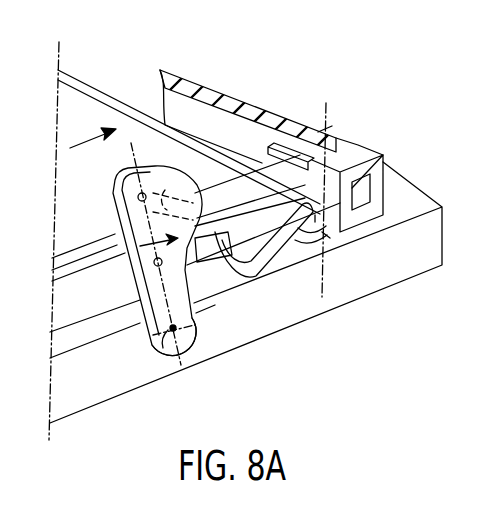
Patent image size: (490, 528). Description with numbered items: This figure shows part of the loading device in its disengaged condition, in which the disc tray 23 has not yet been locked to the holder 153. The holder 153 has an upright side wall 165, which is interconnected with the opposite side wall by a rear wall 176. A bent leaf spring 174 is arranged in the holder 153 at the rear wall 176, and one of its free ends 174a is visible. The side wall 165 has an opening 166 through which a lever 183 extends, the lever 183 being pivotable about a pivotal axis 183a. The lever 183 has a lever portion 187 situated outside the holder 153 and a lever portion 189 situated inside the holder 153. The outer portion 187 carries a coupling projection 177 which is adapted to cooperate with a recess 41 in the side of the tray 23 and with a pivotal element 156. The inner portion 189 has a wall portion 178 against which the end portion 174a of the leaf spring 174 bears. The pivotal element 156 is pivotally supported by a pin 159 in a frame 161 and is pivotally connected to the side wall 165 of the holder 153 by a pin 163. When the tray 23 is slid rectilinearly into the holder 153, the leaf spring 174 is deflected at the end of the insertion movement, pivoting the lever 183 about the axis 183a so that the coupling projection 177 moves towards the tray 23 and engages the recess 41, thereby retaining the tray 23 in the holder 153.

The bent leaf spring 174 is at (115, 101).
The rear wall 176 is at (238, 98).
The disc tray 23 is at (215, 172).
The wall portion 178 is at (280, 147).
The recess 41 is at (153, 167).
The free end 174a is at (325, 133).
The lever portion 189 is at (360, 150).
The opening 166 is at (392, 187).
The holder 153 is at (73, 256).
The side wall 165 is at (103, 237).
The pin 163 is at (157, 266).
The pivotal element 156 is at (155, 310).
The pin 159 is at (168, 356).
The frame 161 is at (104, 386).
The coupling projection 177 is at (196, 313).
The lever portion 187 is at (252, 276).
The lever 183 is at (300, 264).
The pivotal axis 183a is at (333, 272).